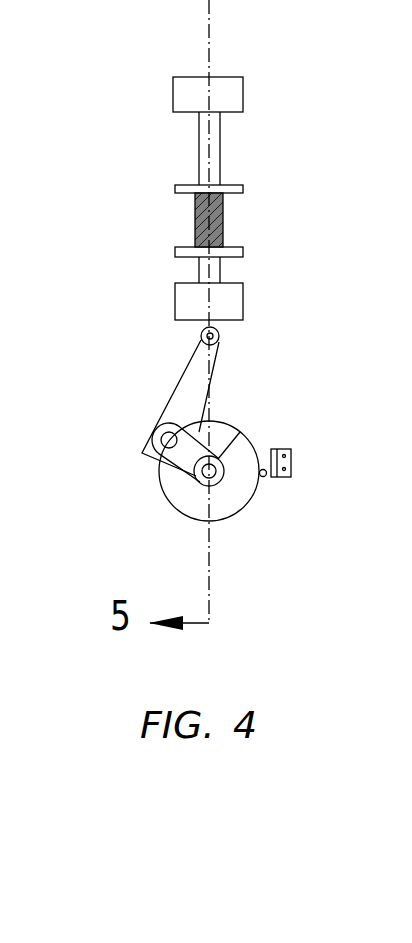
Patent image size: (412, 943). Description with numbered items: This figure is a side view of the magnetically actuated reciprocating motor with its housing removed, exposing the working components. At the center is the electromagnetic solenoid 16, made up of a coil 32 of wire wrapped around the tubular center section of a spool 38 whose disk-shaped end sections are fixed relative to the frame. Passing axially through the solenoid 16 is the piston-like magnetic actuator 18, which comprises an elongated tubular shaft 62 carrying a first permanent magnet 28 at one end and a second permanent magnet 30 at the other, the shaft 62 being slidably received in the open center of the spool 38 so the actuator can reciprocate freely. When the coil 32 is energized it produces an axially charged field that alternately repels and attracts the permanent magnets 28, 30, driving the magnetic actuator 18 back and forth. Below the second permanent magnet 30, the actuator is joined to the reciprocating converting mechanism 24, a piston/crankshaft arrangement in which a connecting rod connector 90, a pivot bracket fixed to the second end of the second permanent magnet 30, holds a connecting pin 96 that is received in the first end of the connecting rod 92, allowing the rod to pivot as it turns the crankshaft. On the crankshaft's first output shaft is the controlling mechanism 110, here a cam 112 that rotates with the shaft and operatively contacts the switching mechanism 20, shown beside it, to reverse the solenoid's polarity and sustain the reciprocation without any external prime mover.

The electromagnetic solenoid 16 is at (232, 221).
The magnetic actuator 18 is at (190, 149).
The switching mechanism 20 is at (306, 465).
The reciprocating converting mechanism 24 is at (222, 396).
The first permanent magnet 28 is at (230, 93).
The second permanent magnet 30 is at (190, 301).
The coil 32 is at (197, 213).
The spool 38 is at (245, 253).
The tubular shaft 62 is at (210, 162).
The connecting rod connector 90 is at (180, 332).
The connecting rod 92 is at (177, 393).
The connecting pin 96 is at (213, 335).
The controlling mechanism 110 is at (148, 471).
The cam 112 is at (178, 488).